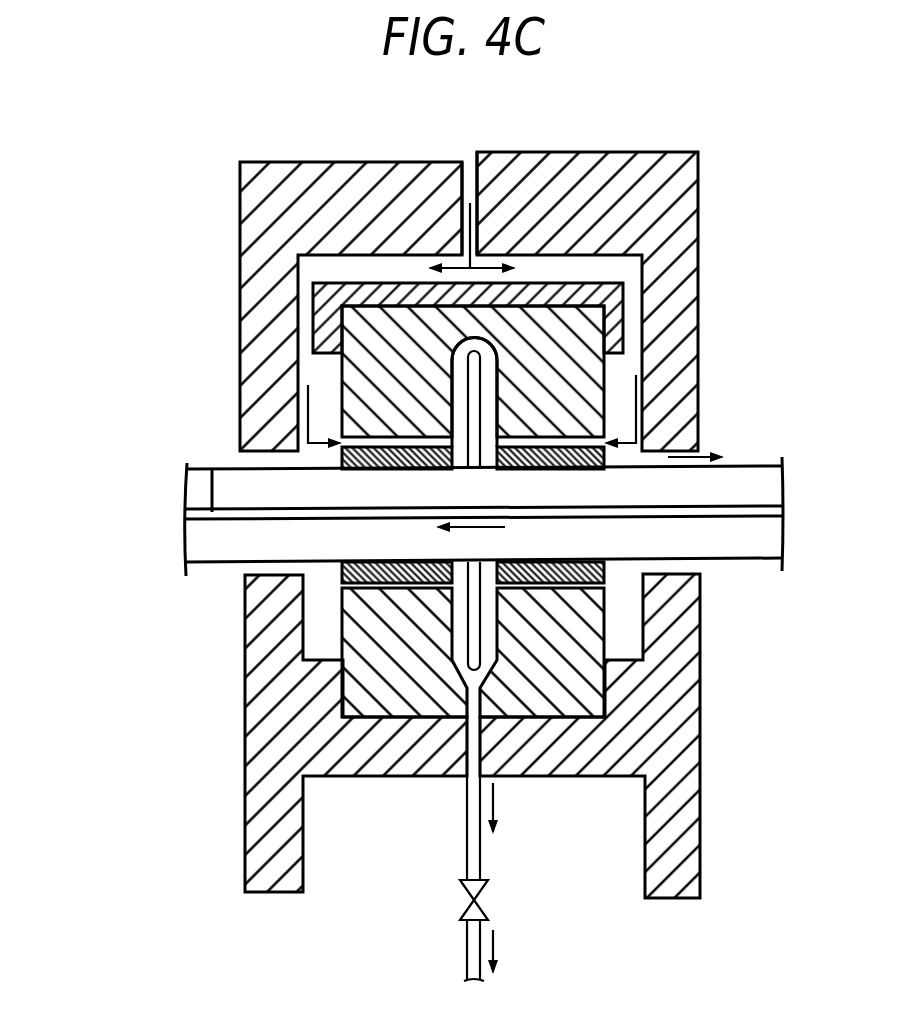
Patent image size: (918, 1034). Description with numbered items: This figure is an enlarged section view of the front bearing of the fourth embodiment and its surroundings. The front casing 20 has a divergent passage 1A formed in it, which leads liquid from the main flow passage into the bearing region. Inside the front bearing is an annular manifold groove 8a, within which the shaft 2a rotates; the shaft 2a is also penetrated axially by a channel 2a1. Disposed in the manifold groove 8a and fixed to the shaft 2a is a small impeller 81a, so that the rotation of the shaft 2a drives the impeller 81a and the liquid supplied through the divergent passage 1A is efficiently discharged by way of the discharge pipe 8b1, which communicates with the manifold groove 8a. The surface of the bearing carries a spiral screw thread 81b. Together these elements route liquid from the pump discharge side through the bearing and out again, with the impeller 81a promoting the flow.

The divergent passage 1A is at (472, 150).
The annular manifold groove 8a is at (462, 343).
The impeller 81a is at (472, 380).
The spiral screw thread 81b is at (398, 456).
The shaft 2a is at (217, 553).
The channel 2a1 is at (212, 470).
The front casing 20 is at (595, 773).
The discharge pipe 8b1 is at (467, 956).